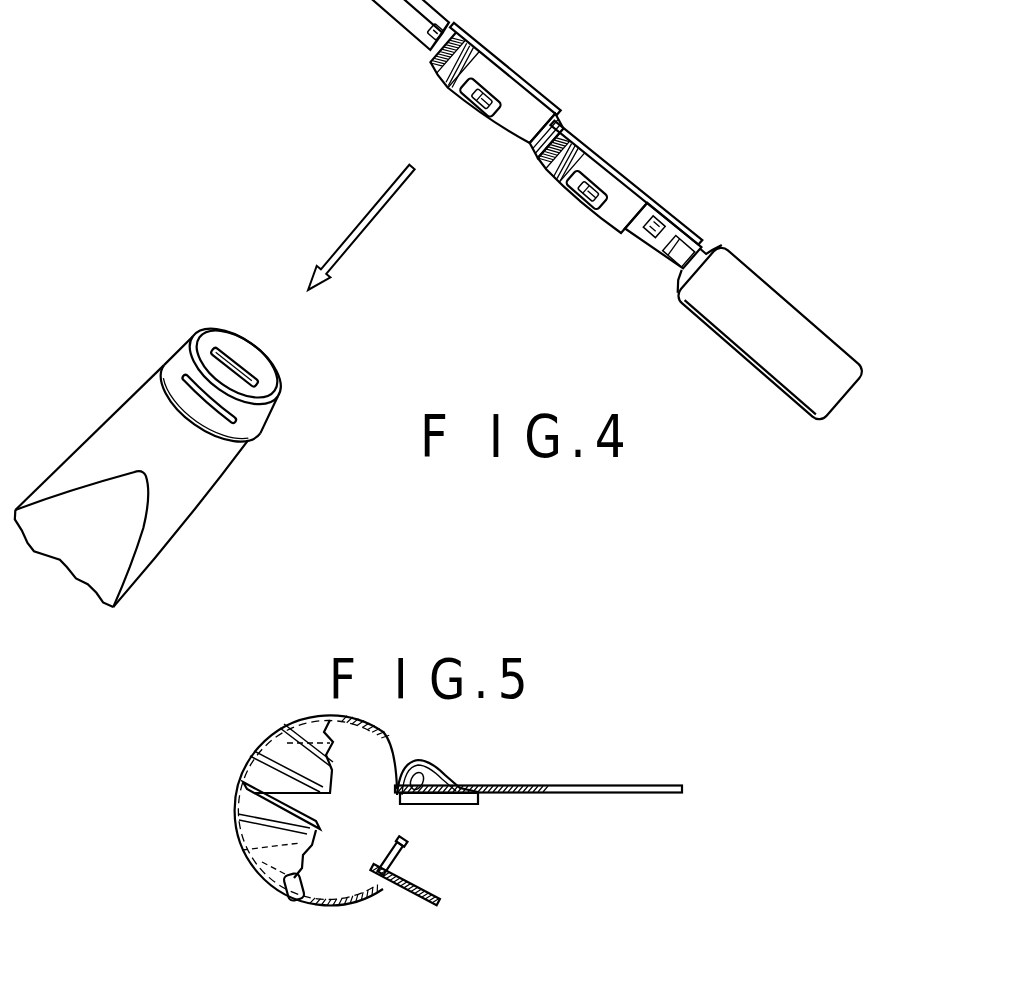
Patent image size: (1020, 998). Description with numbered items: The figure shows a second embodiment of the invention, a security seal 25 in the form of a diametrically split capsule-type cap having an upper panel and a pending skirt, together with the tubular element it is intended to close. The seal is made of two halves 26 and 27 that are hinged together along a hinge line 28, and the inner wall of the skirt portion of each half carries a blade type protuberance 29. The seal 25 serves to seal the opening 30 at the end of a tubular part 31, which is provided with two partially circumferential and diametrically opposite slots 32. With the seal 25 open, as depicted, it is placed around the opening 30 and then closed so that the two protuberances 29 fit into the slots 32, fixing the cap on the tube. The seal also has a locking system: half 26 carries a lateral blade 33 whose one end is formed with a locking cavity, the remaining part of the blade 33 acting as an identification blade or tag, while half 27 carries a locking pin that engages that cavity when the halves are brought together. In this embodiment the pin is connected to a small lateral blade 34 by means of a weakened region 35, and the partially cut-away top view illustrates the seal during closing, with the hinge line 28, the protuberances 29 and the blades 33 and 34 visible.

In FIG. 4, the security seal 25 is at (586, 115).
In FIG. 4, the half of the seal 26 is at (616, 198).
In FIG. 4, the half of the seal 27 is at (490, 87).
In FIG. 4, the hinge line 28 is at (547, 136).
In FIG. 5, the hinge line 28 is at (245, 786).
In FIG. 4, the blade type protuberance 29 is at (462, 95).
In FIG. 4, the opening 30 is at (222, 384).
In FIG. 4, the tubular part 31 is at (108, 410).
In FIG. 4, the slots 32 is at (237, 350).
In FIG. 5, the lateral blade 33 is at (522, 786).
In FIG. 5, the small lateral blade 34 is at (436, 882).
In FIG. 5, the weakened region 35 is at (382, 868).